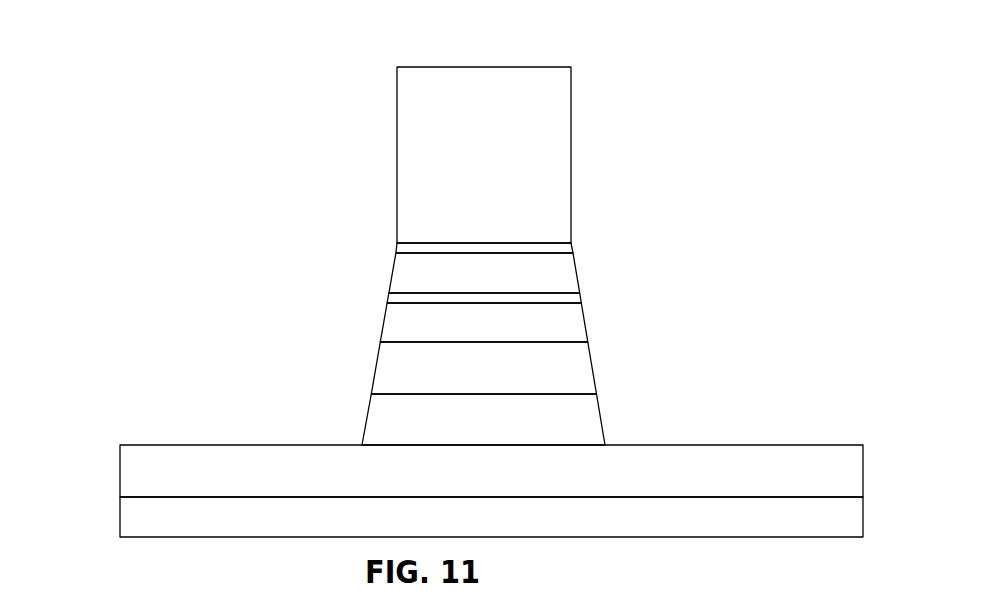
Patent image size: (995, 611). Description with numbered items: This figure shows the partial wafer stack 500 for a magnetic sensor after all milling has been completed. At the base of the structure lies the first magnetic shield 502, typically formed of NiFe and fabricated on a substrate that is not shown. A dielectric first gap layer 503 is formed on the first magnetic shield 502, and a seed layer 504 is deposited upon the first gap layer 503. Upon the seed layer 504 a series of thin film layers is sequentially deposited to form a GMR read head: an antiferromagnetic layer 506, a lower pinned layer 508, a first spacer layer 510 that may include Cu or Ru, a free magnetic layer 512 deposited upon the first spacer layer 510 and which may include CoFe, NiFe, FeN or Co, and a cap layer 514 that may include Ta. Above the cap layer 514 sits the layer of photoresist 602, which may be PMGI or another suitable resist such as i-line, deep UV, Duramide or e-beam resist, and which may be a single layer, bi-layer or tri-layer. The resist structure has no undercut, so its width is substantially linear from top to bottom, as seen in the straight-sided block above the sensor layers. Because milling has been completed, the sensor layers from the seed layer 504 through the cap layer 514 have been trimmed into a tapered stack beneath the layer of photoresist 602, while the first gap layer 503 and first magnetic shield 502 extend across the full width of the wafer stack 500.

The wafer stack 500 is at (140, 183).
The first magnetic shield 502 is at (120, 513).
The first gap layer 503 is at (120, 462).
The seed layer 504 is at (368, 412).
The antiferromagnetic layer 506 is at (376, 367).
The lower pinned layer 508 is at (383, 334).
The first spacer layer 510 is at (388, 301).
The free magnetic layer 512 is at (392, 274).
The cap layer 514 is at (397, 250).
The layer of photoresist 602 is at (397, 155).